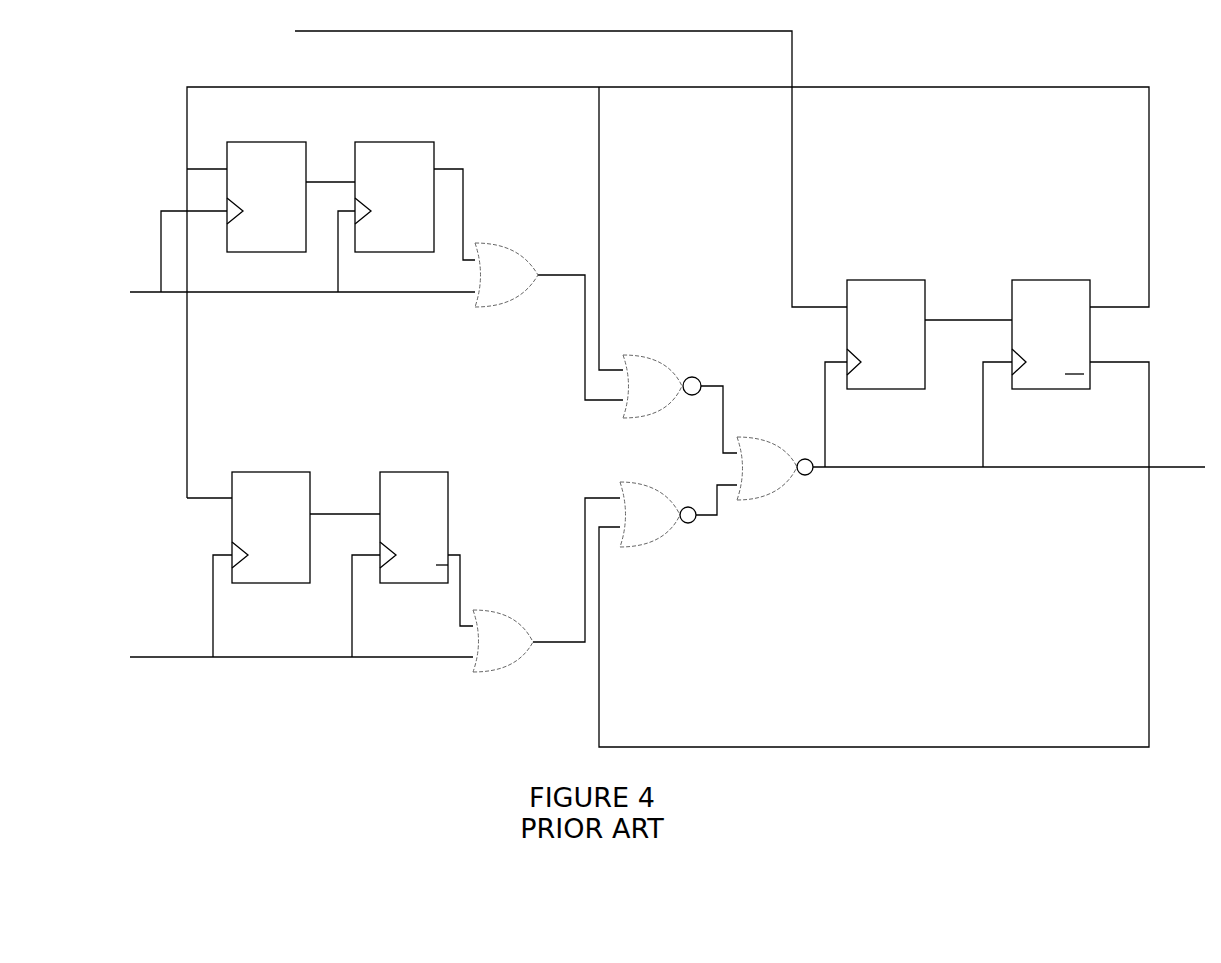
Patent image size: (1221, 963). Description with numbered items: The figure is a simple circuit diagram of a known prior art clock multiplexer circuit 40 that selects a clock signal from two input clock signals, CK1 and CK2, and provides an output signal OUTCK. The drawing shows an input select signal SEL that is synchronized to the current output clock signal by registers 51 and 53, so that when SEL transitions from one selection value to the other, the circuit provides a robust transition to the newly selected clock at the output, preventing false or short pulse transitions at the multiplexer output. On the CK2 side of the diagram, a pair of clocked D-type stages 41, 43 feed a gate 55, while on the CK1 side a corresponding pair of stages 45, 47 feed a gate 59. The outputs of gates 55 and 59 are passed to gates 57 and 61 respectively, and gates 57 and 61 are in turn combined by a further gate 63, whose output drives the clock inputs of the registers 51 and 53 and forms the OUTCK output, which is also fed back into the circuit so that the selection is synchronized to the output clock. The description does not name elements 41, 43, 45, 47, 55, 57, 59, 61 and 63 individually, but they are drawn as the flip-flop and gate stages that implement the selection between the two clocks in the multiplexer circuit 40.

The clock multiplexer circuit 40 is at (1090, 28).
The D flip-flop 41 is at (267, 185).
The D flip-flop 43 is at (394, 185).
The D flip-flop 45 is at (271, 515).
The D flip-flop 47 is at (414, 513).
The register 51 is at (886, 320).
The register 53 is at (1051, 320).
The OR gate 55 is at (509, 263).
The NOR gate 57 is at (648, 397).
The OR gate 59 is at (502, 630).
The NOR gate 61 is at (647, 527).
The NOR gate 63 is at (770, 472).